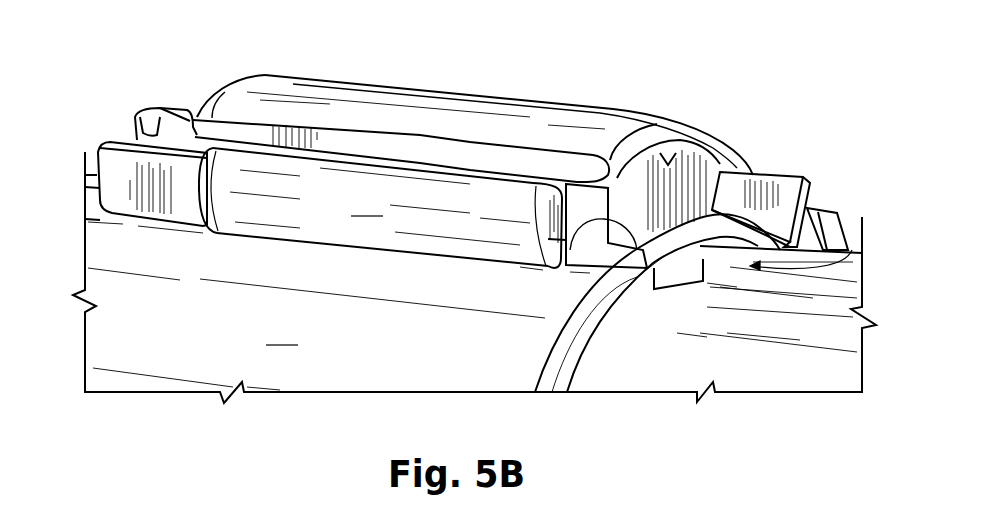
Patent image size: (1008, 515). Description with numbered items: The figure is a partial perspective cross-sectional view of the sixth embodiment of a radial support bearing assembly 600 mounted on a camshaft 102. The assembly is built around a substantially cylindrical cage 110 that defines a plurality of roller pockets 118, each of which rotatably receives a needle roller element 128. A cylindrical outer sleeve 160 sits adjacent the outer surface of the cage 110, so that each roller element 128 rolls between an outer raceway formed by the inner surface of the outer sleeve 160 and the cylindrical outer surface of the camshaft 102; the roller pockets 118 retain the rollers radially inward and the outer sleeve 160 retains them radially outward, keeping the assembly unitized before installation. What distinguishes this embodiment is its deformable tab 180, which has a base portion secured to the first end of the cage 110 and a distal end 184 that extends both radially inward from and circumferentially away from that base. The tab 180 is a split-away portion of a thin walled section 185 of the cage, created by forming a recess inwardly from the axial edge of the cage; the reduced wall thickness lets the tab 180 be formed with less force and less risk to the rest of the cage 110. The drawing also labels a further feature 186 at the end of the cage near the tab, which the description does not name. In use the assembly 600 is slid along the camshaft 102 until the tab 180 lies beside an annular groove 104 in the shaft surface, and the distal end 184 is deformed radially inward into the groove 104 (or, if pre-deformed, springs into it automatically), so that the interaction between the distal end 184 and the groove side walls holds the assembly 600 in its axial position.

The camshaft 102 is at (474, 277).
The annular groove 104 is at (613, 367).
The cage 110 is at (170, 137).
The roller pocket 118 is at (556, 240).
The roller element 128 is at (380, 208).
The outer sleeve 160 is at (445, 108).
The deformable tab 180 is at (837, 250).
The distal end 184 is at (677, 293).
The thin walled section 185 is at (543, 270).
The lug 186 is at (700, 176).
The radial support bearing assembly 600 is at (627, 67).